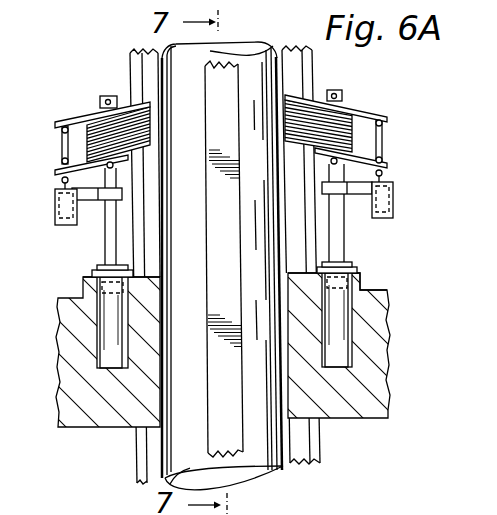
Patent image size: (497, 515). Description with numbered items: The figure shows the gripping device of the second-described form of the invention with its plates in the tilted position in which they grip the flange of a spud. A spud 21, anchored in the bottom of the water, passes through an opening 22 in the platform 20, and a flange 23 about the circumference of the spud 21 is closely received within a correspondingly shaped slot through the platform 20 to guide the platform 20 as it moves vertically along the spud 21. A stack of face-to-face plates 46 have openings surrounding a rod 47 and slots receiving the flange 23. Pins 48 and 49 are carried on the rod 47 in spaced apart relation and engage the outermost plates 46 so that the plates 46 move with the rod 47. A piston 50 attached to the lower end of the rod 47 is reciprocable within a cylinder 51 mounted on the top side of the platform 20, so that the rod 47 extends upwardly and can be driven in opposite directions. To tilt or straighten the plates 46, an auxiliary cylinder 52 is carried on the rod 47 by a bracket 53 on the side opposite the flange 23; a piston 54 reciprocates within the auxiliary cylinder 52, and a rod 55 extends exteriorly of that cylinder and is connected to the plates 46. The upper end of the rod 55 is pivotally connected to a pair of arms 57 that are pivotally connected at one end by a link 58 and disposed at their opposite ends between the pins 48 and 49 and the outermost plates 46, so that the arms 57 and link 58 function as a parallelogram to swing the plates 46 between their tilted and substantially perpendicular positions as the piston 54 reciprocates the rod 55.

The platform 20 is at (394, 332).
The spud 21 is at (296, 452).
The opening 22 is at (160, 348).
The flange 23 is at (133, 236).
The plates 46 is at (150, 128).
The rod 47 is at (117, 217).
The pin 48 is at (100, 105).
The pin 49 is at (114, 166).
The piston 50 is at (83, 288).
The cylinder 51 is at (100, 342).
The auxiliary cylinder 52 is at (56, 194).
The bracket 53 is at (92, 203).
The piston 54 is at (70, 218).
The rod 55 is at (62, 179).
The arms 57 is at (60, 121).
The link 58 is at (58, 147).